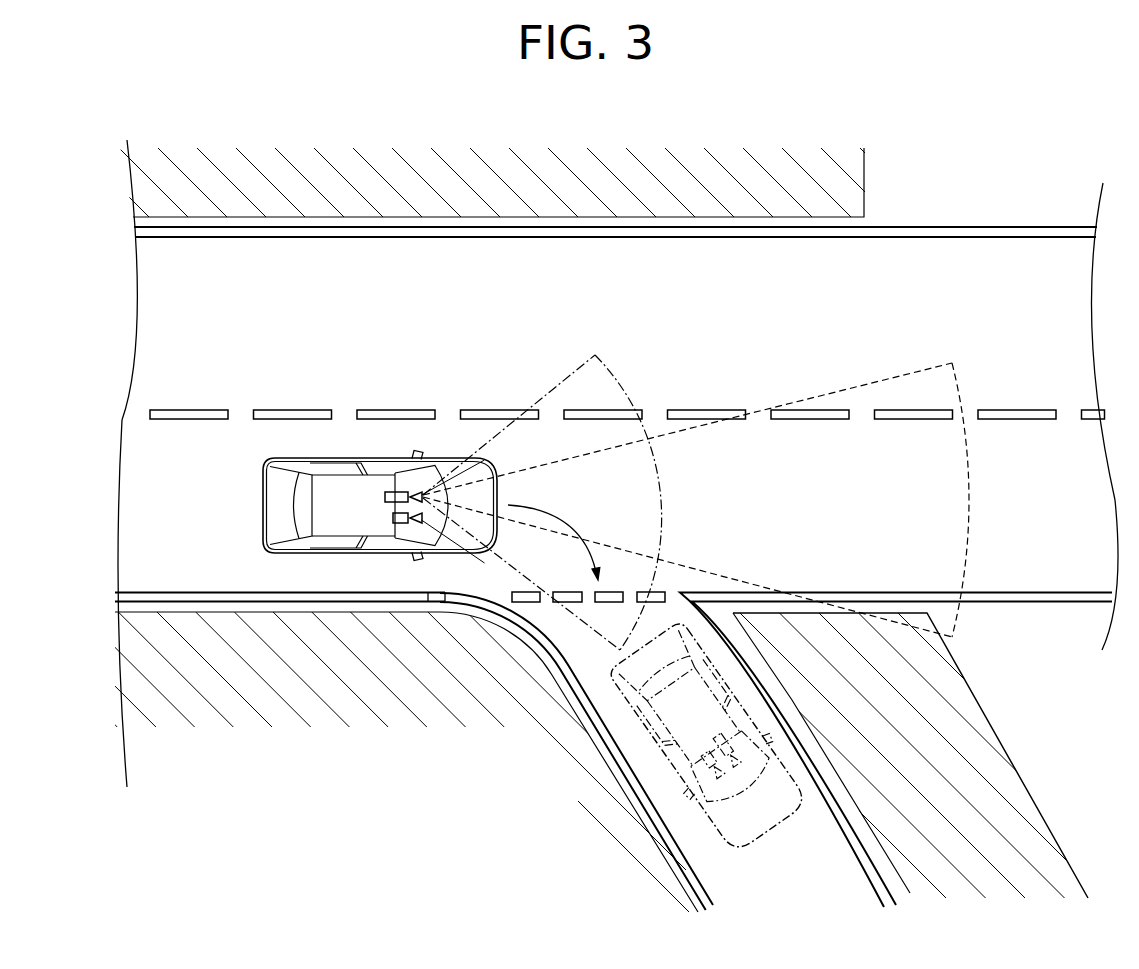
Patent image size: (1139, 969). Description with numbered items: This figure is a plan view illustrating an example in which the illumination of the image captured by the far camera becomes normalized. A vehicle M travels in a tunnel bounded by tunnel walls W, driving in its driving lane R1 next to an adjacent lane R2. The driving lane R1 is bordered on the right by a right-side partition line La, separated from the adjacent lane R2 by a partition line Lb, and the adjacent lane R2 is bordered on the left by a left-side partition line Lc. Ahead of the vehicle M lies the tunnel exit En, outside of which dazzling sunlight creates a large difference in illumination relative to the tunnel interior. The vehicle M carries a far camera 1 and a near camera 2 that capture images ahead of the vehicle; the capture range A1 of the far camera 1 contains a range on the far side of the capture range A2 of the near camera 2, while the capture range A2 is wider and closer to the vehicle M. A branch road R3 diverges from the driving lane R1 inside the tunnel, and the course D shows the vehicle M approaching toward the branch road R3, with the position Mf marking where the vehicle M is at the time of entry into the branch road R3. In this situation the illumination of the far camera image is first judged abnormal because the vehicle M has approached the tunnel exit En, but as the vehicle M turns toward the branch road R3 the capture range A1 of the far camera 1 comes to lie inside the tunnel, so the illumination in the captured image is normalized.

The tunnel walls W is at (459, 178).
The tunnel exit En is at (900, 277).
The left-side partition line Lc is at (160, 231).
The adjacent lane R2 is at (160, 322).
The partition line Lb is at (152, 412).
The driving lane R1 is at (160, 498).
The right-side partition line La is at (134, 593).
The vehicle M is at (342, 492).
The far camera 1 is at (388, 488).
The near camera 2 is at (407, 526).
The capture range of the near camera A2 is at (580, 371).
The capture range of the far camera A1 is at (873, 384).
The course D is at (557, 517).
The position of the vehicle at entry into the branch road Mf is at (637, 782).
The branch road R3 is at (797, 888).